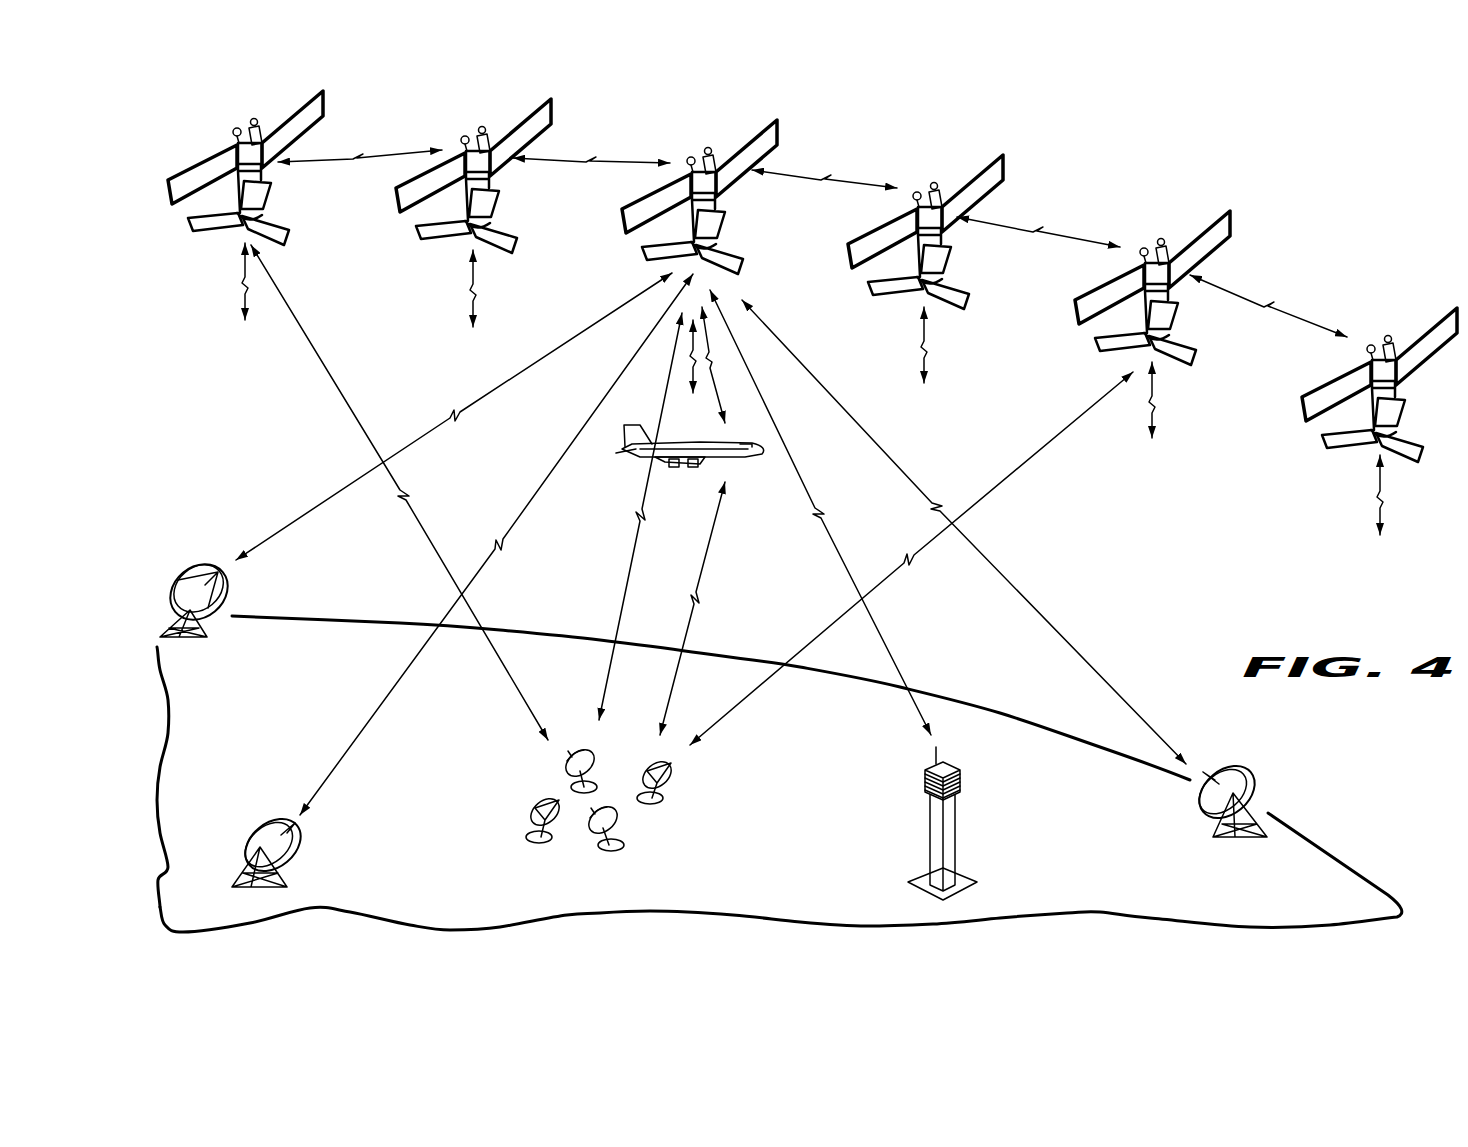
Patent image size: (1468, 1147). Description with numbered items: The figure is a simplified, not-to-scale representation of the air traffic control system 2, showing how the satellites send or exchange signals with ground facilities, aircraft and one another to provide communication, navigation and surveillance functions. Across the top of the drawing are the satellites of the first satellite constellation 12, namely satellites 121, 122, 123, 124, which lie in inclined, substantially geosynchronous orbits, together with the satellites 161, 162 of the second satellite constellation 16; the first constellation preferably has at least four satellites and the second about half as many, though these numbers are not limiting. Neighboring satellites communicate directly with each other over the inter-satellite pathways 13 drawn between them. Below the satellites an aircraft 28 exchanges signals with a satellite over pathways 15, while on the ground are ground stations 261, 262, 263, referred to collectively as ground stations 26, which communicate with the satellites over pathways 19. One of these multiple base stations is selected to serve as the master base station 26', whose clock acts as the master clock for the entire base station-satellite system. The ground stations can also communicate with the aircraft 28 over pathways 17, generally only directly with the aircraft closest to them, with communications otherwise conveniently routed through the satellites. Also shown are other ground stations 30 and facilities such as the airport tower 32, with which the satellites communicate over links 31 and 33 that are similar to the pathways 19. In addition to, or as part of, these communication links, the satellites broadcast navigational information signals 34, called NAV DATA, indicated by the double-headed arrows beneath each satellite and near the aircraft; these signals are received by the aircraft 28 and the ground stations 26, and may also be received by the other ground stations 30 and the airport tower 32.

The air traffic control (ATC) system 2 is at (1366, 585).
The first satellite constellation 12 is at (1283, 190).
The inter-satellite pathways 13 is at (403, 153).
The pathways 15 is at (719, 405).
The second satellite constellation 16 is at (1411, 262).
The pathways 17 is at (705, 583).
The pathways 19 is at (323, 492).
The ground stations 26 is at (791, 774).
The master base station 26' is at (371, 855).
The aircraft 28 is at (750, 463).
The other ground stations 30 is at (510, 782).
The links 31 is at (422, 535).
The airport tower 32 is at (958, 840).
The links 33 is at (882, 629).
The navigational information signals (NAV DATA) 34 is at (243, 296).
The satellite 121 is at (553, 106).
The satellite 122 is at (778, 123).
The satellite 123 is at (1000, 165).
The satellite 124 is at (1226, 223).
The satellite 161 is at (190, 174).
The satellite 162 is at (1438, 325).
The ground station 261 is at (194, 558).
The ground station 262 is at (262, 814).
The ground station 263 is at (1254, 781).